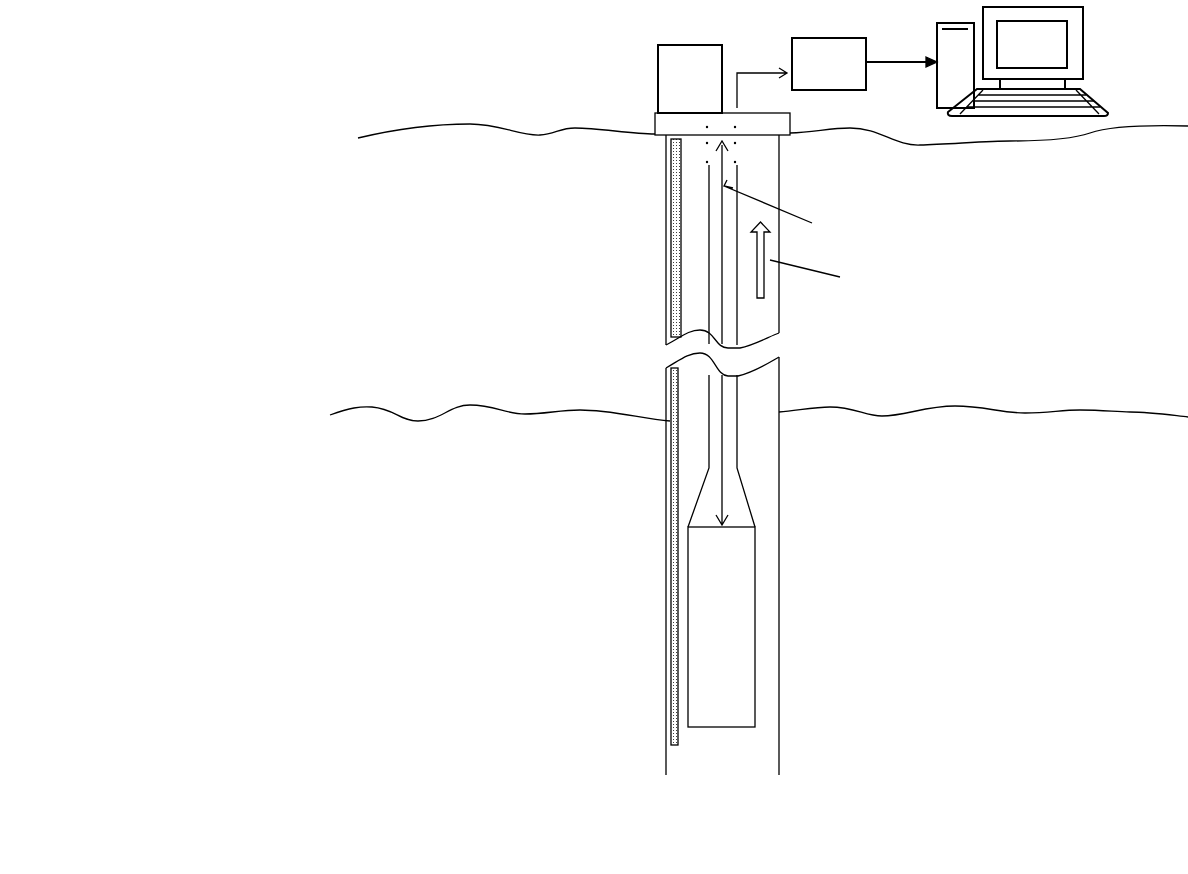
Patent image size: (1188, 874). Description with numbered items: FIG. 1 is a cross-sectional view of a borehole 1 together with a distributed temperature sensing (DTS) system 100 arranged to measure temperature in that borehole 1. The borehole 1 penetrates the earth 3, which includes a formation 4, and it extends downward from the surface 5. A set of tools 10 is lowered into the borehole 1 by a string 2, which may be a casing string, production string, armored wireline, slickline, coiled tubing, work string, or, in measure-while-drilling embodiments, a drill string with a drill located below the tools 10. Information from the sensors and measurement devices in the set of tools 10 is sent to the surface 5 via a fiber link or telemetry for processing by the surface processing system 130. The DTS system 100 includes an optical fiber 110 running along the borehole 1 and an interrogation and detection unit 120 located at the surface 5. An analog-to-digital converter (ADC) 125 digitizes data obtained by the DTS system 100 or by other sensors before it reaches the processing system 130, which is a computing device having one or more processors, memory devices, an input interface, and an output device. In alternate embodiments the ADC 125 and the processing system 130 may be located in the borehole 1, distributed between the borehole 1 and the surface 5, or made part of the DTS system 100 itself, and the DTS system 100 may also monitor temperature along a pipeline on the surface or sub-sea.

The borehole 1 is at (772, 175).
The string 2 is at (698, 244).
The earth 3 is at (1072, 229).
The formation 4 is at (1097, 500).
The surface 5 is at (736, 129).
The set of tools 10 is at (757, 642).
The distributed temperature sensing (DTS) system 100 is at (482, 300).
The optical fiber 110 is at (663, 213).
The interrogation and detection unit 120 is at (712, 94).
The analog-to-digital converter (ADC) 125 is at (852, 78).
The surface processing system 130 is at (1056, 55).